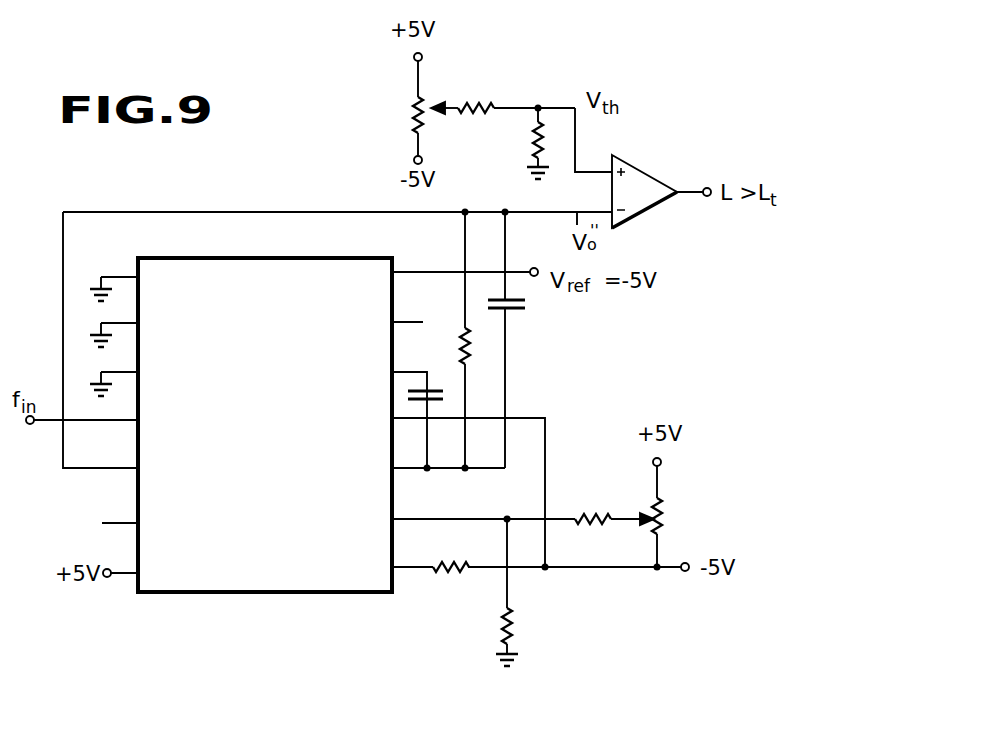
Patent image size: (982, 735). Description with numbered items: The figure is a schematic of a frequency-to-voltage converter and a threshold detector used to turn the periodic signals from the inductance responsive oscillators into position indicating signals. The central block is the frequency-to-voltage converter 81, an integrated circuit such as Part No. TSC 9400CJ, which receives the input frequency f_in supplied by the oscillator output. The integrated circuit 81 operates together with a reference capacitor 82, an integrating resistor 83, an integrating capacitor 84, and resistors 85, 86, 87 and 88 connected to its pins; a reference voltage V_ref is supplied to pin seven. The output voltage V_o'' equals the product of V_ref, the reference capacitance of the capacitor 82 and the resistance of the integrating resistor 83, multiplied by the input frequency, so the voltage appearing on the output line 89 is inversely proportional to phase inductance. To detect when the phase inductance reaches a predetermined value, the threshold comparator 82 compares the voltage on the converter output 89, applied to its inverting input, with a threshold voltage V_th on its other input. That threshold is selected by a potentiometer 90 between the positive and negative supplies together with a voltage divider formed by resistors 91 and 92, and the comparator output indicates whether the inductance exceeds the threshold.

The frequency-to-voltage converter 81 is at (306, 595).
The threshold comparator 82 is at (431, 389).
The integrating resistor 83 is at (462, 330).
The integrating capacitor 84 is at (518, 311).
The resistor 85 is at (451, 580).
The resistor 86 is at (521, 626).
The resistor 87 is at (590, 512).
The resistor 88 is at (663, 512).
The output line 89 is at (508, 215).
The potentiometer 90 is at (412, 104).
The resistor 91 is at (477, 91).
The resistor 92 is at (530, 143).